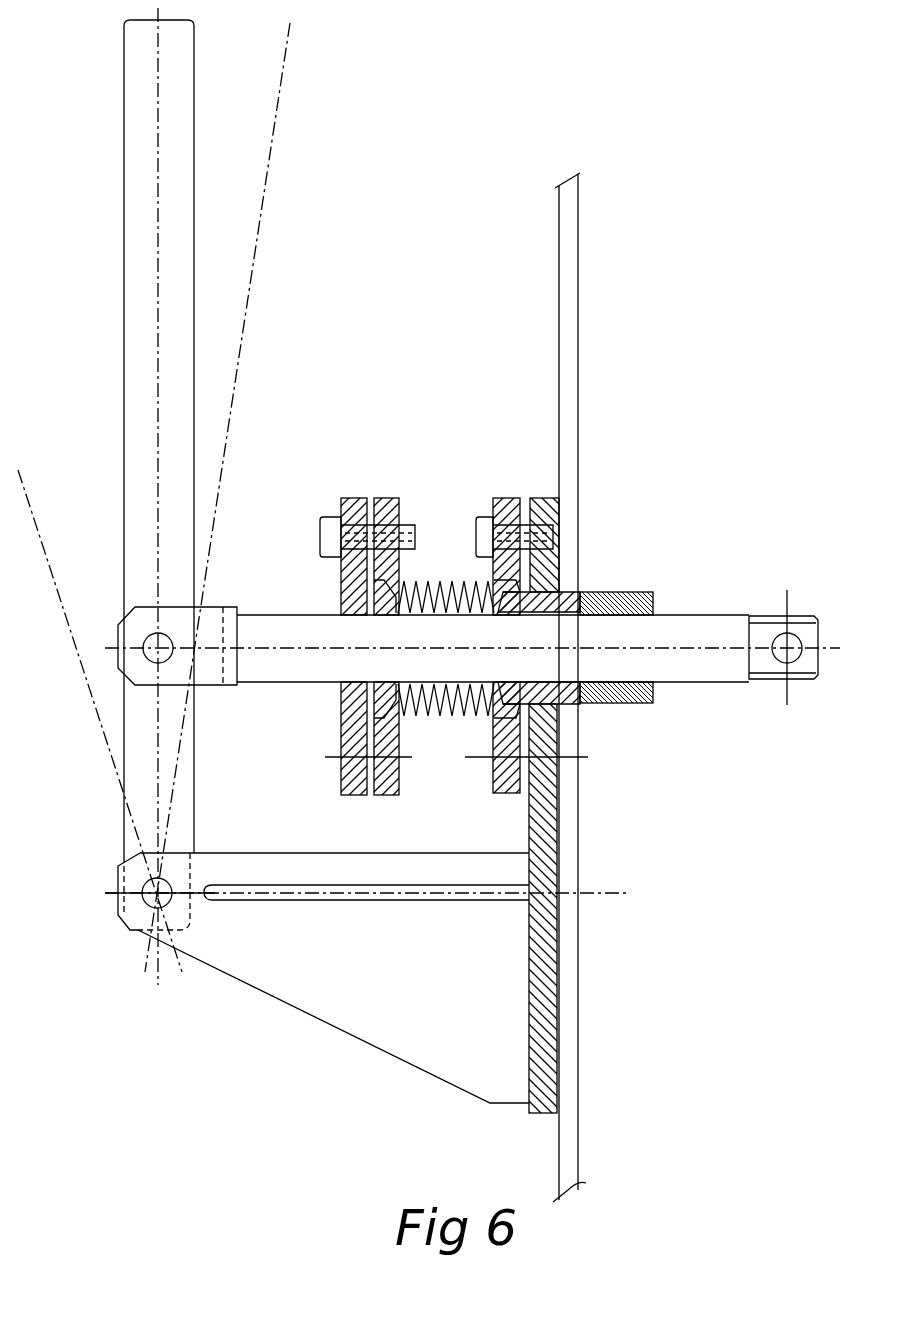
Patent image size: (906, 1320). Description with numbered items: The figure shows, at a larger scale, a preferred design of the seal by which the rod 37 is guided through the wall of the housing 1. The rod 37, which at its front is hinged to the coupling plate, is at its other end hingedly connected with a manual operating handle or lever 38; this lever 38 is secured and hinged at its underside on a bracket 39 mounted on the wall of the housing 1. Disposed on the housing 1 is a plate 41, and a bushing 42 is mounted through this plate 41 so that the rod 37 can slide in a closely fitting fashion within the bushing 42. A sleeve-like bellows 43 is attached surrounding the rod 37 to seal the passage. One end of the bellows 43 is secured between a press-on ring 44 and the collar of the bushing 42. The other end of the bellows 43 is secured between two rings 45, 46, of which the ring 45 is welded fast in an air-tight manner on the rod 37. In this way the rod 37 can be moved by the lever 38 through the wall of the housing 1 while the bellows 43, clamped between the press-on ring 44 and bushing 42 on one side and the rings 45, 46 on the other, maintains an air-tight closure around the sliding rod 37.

The housing 1 is at (565, 853).
The rod 37 is at (700, 668).
The manual operating handle or lever 38 is at (176, 60).
The bracket 39 is at (457, 1047).
The plate 41 is at (545, 993).
The bushing 42 is at (625, 590).
The bellows 43 is at (448, 580).
The press-on ring 44 is at (510, 498).
The ring 45 is at (356, 498).
The ring 46 is at (389, 498).